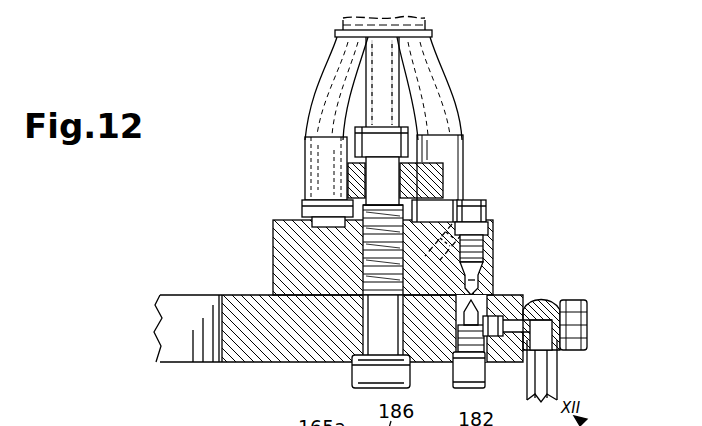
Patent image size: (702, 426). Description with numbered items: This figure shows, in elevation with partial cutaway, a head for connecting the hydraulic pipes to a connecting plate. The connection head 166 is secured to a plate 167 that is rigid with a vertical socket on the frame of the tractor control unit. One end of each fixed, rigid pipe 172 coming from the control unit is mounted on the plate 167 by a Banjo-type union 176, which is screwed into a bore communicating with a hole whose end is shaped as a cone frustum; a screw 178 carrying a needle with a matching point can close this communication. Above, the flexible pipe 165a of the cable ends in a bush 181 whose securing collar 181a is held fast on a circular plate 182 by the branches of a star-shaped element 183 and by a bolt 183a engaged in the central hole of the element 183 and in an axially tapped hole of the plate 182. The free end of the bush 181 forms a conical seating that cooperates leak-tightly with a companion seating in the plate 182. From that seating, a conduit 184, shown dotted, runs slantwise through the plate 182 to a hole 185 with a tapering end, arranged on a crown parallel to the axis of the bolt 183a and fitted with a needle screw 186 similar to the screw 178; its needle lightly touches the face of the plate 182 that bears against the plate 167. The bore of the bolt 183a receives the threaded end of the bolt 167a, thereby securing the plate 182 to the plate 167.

The flexible pipe 165a is at (323, 88).
The connection head 166 is at (260, 223).
The plate 167 is at (246, 348).
The bolt 167a is at (350, 372).
The rigid pipe 172 is at (550, 393).
The union 176 is at (547, 297).
The screw 178 is at (487, 378).
The bush 181 is at (305, 146).
The securing collar 181a is at (303, 210).
The circular plate 182 is at (283, 260).
The star-shaped element 183 is at (430, 176).
The bolt 183a is at (412, 127).
The conduit 184 is at (437, 255).
The hole 185 is at (492, 269).
The screw 186 is at (487, 202).